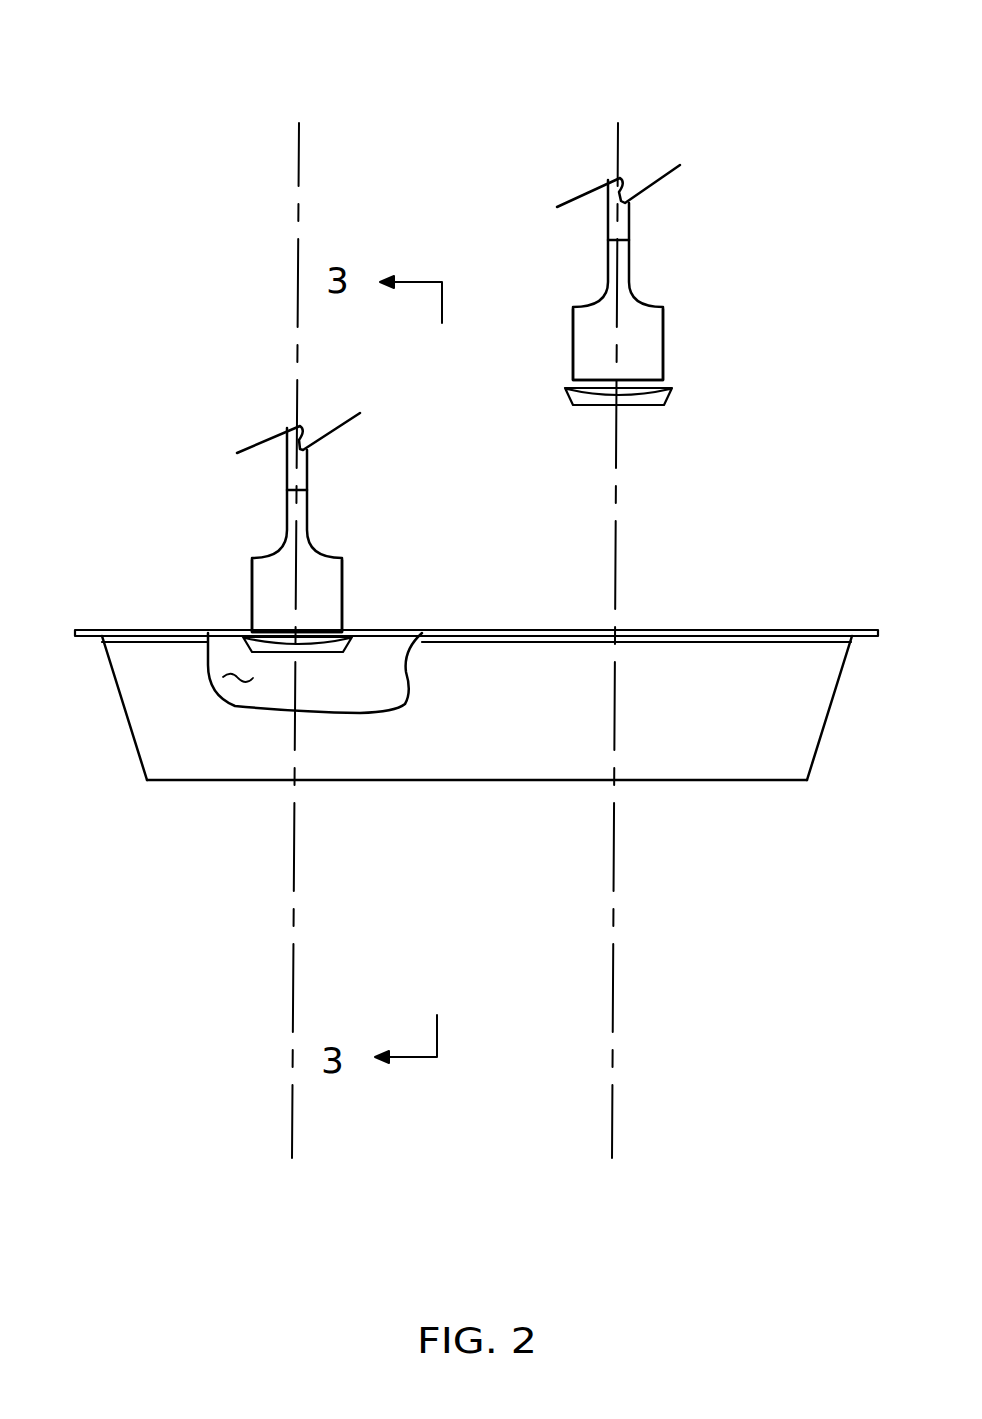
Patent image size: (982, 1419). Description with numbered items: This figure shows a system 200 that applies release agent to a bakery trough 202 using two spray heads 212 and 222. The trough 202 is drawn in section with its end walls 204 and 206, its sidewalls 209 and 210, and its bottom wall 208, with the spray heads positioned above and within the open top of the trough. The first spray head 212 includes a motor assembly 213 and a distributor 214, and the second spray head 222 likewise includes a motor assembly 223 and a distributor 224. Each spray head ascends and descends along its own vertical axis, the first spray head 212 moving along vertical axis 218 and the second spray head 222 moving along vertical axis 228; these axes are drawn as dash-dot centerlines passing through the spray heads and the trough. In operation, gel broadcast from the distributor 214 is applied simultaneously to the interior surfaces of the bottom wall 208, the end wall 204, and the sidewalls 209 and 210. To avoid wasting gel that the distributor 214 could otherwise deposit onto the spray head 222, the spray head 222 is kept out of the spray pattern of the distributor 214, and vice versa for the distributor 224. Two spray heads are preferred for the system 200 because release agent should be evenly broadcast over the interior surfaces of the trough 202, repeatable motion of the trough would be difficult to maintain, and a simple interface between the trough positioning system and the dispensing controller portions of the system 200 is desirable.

The system 200 is at (767, 46).
The bakery trough 202 is at (742, 630).
The end wall 204 is at (125, 723).
The end wall 206 is at (828, 715).
The bottom wall 208 is at (698, 782).
The sidewall 209 is at (237, 670).
The sidewall 210 is at (475, 700).
The spray head 212 is at (330, 549).
The motor assembly 213 is at (343, 587).
The distributor 214 is at (307, 655).
The vertical axis 218 is at (295, 848).
The spray head 222 is at (677, 311).
The motor assembly 223 is at (665, 345).
The distributor 224 is at (672, 394).
The vertical axis 228 is at (615, 870).